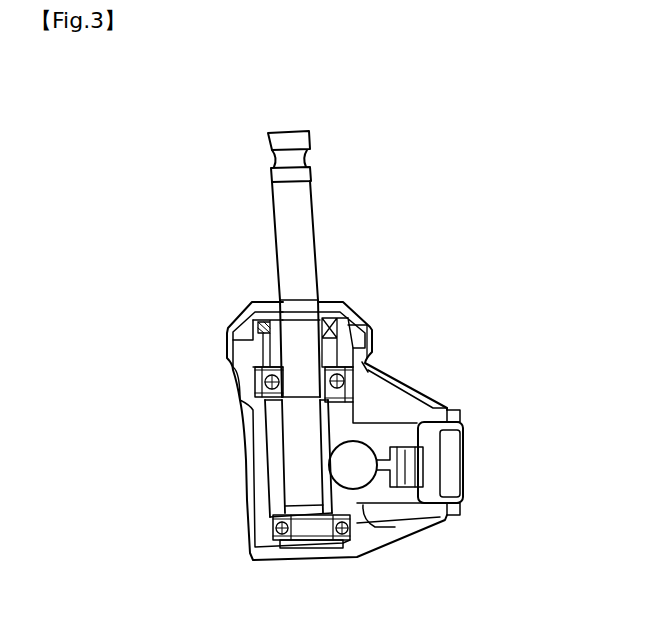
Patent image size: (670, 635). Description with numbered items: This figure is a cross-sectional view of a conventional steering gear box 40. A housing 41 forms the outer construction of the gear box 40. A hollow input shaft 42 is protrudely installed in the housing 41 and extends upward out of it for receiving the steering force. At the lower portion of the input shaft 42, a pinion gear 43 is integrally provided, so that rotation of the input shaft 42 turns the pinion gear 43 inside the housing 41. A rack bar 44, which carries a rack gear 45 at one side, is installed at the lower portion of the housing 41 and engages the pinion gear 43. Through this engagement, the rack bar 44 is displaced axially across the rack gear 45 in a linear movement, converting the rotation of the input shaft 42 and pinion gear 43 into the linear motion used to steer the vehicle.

The gear box 40 is at (400, 330).
The housing 41 is at (237, 377).
The hollow input shaft 42 is at (305, 232).
The pinion gear 43 is at (290, 448).
The rack bar 44 is at (367, 470).
The rack gear 45 is at (363, 503).